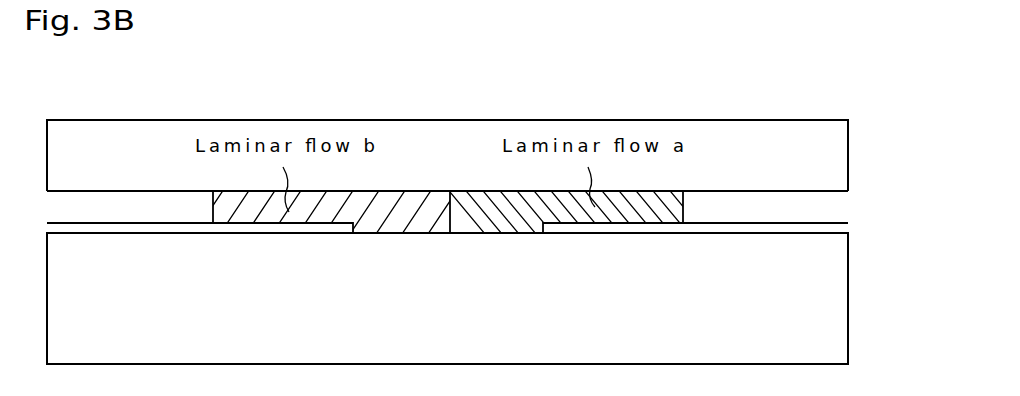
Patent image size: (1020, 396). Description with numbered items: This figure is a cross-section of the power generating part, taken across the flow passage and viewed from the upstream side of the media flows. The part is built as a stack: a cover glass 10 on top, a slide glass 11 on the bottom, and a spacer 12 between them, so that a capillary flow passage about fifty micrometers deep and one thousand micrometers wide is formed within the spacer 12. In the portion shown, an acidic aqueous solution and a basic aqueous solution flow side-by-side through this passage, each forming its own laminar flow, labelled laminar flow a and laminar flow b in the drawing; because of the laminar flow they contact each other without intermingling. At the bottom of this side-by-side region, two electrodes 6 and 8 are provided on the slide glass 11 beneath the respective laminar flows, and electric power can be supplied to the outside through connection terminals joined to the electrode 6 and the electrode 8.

The cover glass 10 is at (840, 148).
The spacer 12 is at (840, 213).
The slide glass 11 is at (840, 315).
The electrode 6 is at (120, 226).
The electrode 8 is at (813, 228).